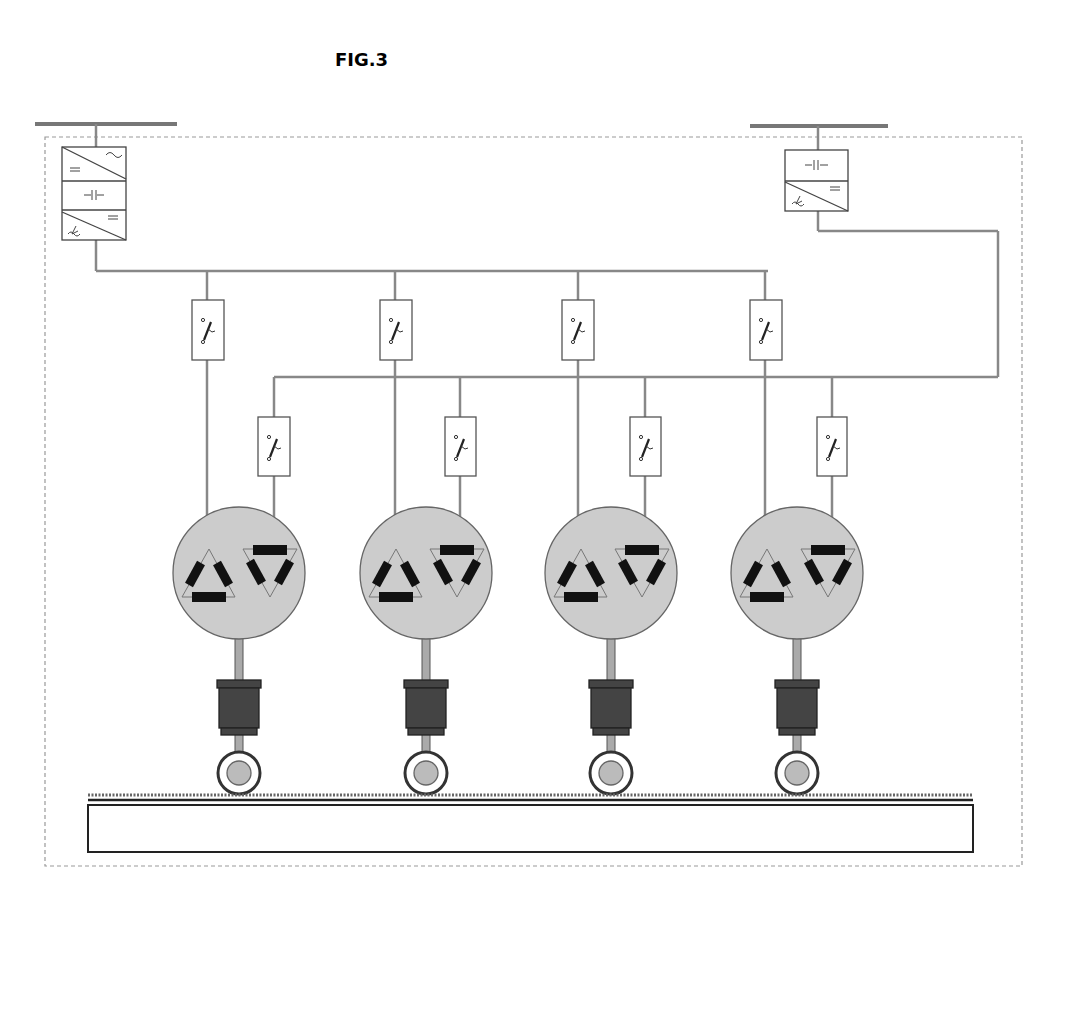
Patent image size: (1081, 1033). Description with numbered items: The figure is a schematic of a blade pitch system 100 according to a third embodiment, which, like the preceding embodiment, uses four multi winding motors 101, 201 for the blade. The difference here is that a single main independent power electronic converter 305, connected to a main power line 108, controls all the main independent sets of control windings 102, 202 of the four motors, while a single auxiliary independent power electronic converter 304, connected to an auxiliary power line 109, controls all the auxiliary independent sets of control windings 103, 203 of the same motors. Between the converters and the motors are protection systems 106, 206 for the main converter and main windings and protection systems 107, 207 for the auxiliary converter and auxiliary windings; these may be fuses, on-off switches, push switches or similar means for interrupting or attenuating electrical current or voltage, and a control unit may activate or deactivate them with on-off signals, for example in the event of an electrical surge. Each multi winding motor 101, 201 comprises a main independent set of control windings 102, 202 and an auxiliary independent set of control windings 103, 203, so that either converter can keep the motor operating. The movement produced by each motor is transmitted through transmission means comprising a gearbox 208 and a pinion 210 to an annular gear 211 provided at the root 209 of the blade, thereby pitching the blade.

The blade pitch system 100 is at (581, 135).
The main power line 108 is at (94, 119).
The auxiliary power line 109 is at (820, 121).
The main independent power electronic converter 305 is at (129, 187).
The auxiliary independent power electronic converter 304 is at (851, 182).
The protection system 106 is at (190, 329).
The protection system 206 is at (378, 329).
The protection system 107 is at (292, 446).
The protection system 207 is at (478, 446).
The multi winding motor 101 is at (182, 609).
The main independent set of control windings 102 is at (207, 602).
The auxiliary independent set of control windings 103 is at (263, 598).
The multi winding motor 201 is at (369, 609).
The main independent set of control windings 202 is at (394, 602).
The auxiliary independent set of control windings 203 is at (450, 598).
The gearbox 208 is at (214, 702).
The pinion 210 is at (264, 776).
The annular gear 211 is at (977, 797).
The root 209 is at (977, 824).